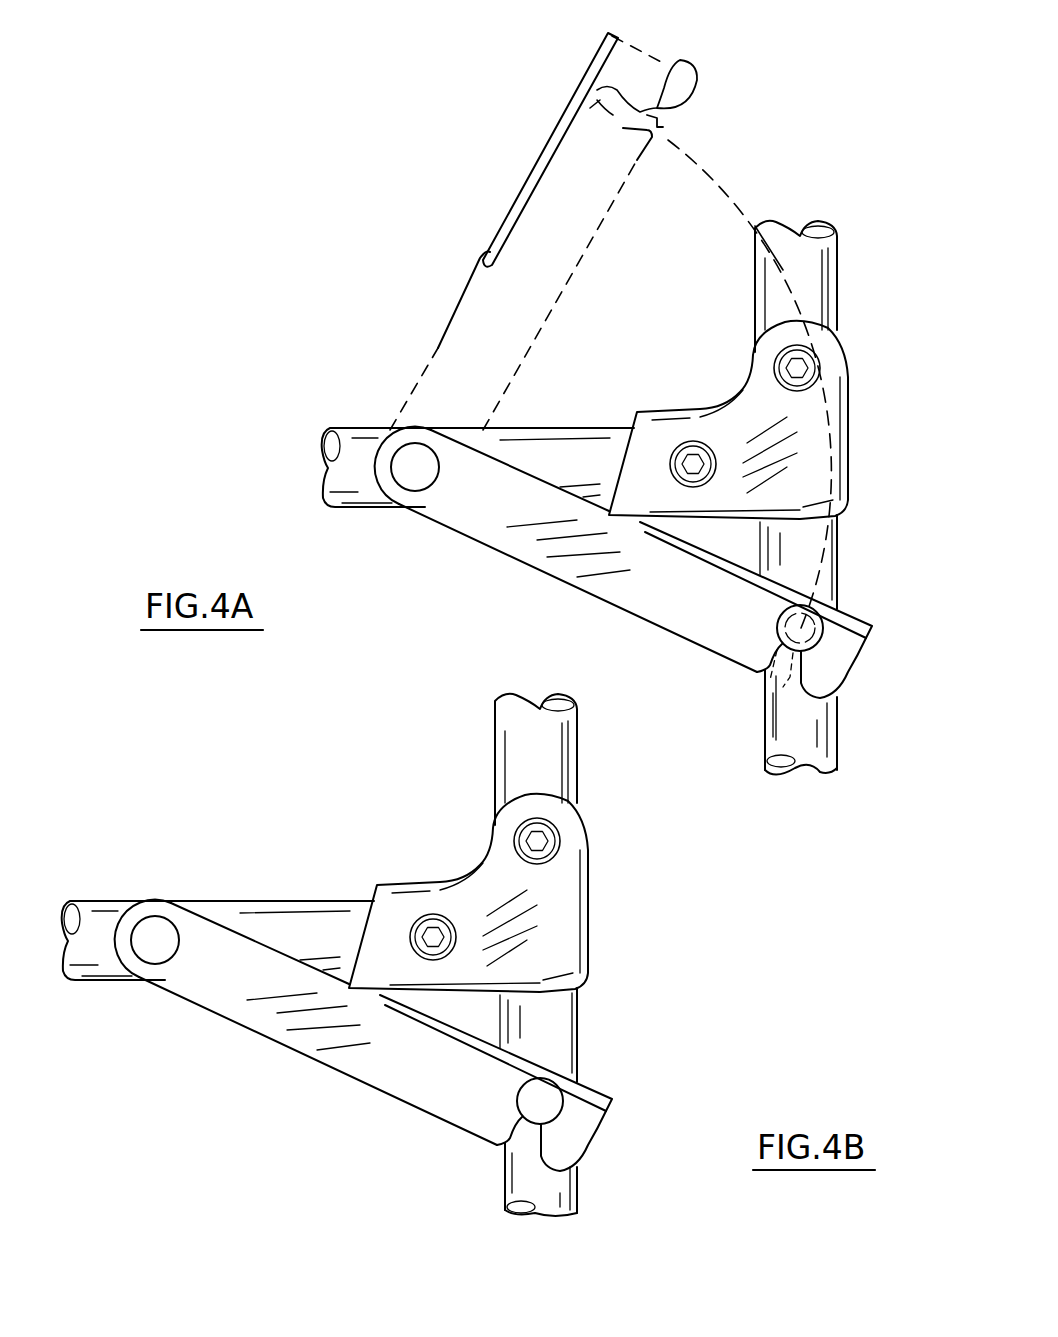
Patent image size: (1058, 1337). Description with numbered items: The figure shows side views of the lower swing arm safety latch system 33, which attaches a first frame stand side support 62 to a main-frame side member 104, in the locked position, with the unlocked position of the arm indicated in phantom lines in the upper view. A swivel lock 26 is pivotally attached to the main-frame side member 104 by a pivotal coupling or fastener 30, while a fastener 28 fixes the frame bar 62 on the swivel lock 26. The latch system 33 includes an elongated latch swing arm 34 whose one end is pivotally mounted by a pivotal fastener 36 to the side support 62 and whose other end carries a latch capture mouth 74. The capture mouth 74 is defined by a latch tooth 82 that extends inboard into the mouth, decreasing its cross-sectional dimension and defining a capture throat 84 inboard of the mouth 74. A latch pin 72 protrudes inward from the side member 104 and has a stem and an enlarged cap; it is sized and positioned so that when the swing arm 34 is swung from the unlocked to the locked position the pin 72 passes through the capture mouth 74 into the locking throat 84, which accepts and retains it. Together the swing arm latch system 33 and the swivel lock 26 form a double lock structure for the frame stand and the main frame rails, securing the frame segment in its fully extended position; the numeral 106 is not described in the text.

In FIG. 4A, the swivel lock 26 is at (850, 462).
In FIG. 4B, the swivel lock 26 is at (505, 893).
In FIG. 4A, the fastener 28 is at (820, 388).
In FIG. 4B, the fastener 28 is at (585, 842).
In FIG. 4B, the pivotal coupling or fastener 30 is at (411, 894).
In FIG. 4A, the lower swing arm safety latch system 33 is at (687, 333).
In FIG. 4B, the lower swing arm safety latch system 33 is at (265, 1077).
In FIG. 4A, the latch swing arm 34 is at (478, 542).
In FIG. 4B, the latch swing arm 34 is at (375, 1037).
In FIG. 4A, the pivotal fastener 36 is at (399, 485).
In FIG. 4B, the pivotal fastener 36 is at (152, 976).
In FIG. 4A, the first frame stand side support 62 is at (362, 428).
In FIG. 4B, the first frame stand side support 62 is at (207, 977).
In FIG. 4A, the latch pin 72 is at (770, 683).
In FIG. 4B, the latch pin 72 is at (495, 1121).
In FIG. 4A, the latch capture mouth 74 is at (665, 122).
In FIG. 4A, the latch tooth 82 is at (673, 87).
In FIG. 4A, the capture throat 84 is at (597, 104).
In FIG. 4B, the main-frame side member 104 is at (585, 955).
In FIG. 4A, the vertical support tube 106 is at (842, 298).